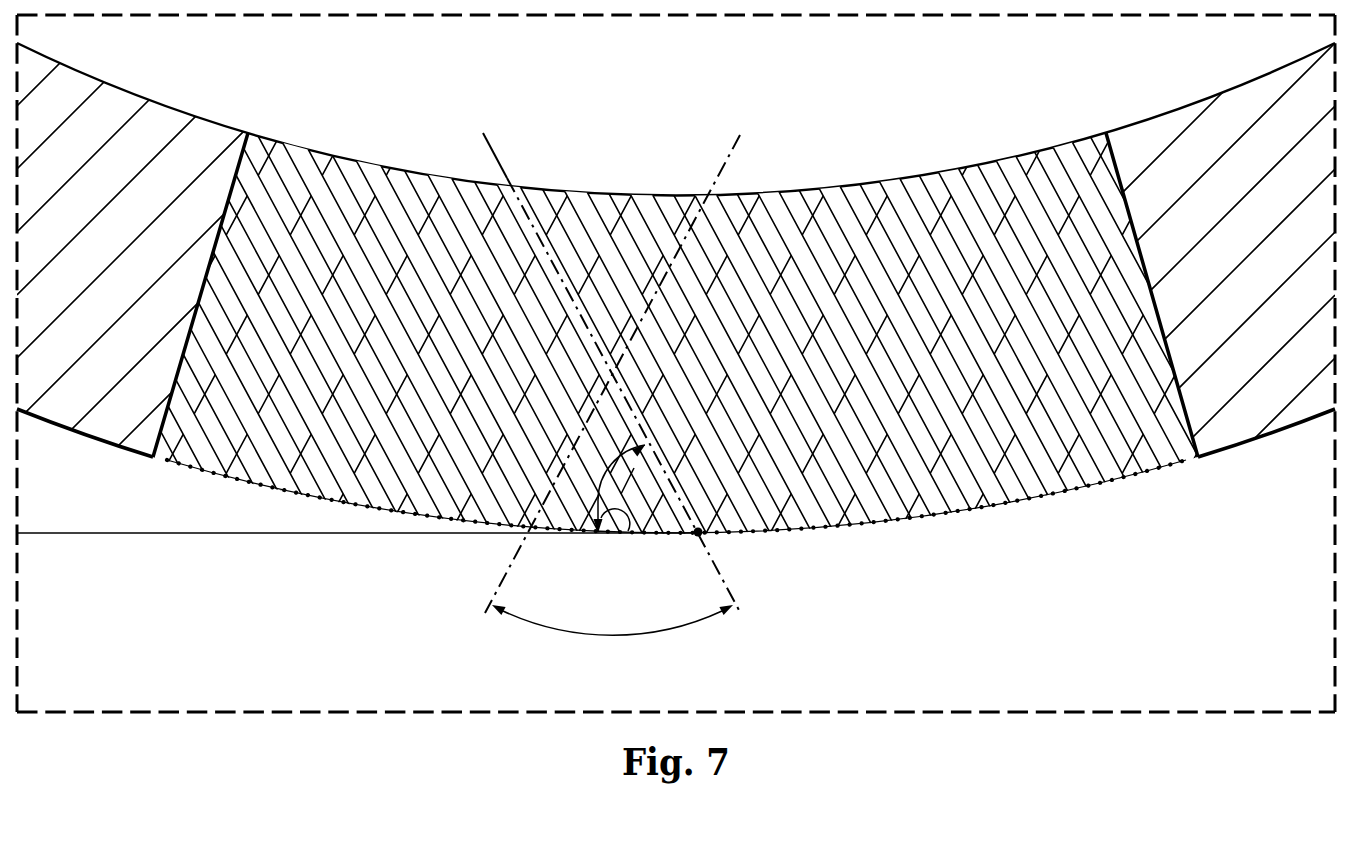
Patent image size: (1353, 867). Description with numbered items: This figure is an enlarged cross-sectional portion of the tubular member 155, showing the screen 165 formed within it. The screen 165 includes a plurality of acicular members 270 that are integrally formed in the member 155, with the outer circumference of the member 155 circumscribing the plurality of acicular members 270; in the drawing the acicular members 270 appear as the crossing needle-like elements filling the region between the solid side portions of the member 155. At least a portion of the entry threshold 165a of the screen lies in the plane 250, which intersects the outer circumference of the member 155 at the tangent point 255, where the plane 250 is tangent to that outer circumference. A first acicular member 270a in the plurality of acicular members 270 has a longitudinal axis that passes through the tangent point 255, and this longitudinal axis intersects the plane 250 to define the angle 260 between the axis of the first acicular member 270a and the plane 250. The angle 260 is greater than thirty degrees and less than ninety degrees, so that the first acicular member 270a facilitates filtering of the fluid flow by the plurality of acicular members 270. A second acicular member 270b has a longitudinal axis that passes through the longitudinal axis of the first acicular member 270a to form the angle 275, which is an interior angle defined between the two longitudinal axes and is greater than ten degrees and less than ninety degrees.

The member 155 is at (98, 431).
The screen 165 is at (653, 95).
The entry threshold 165a is at (1033, 498).
The plane 250 is at (117, 535).
The tangent point 255 is at (697, 539).
The angle 260 is at (627, 532).
The plurality of acicular members 270 is at (849, 128).
The first acicular member 270a is at (537, 208).
The second acicular member 270b is at (683, 211).
The angle 275 is at (613, 634).